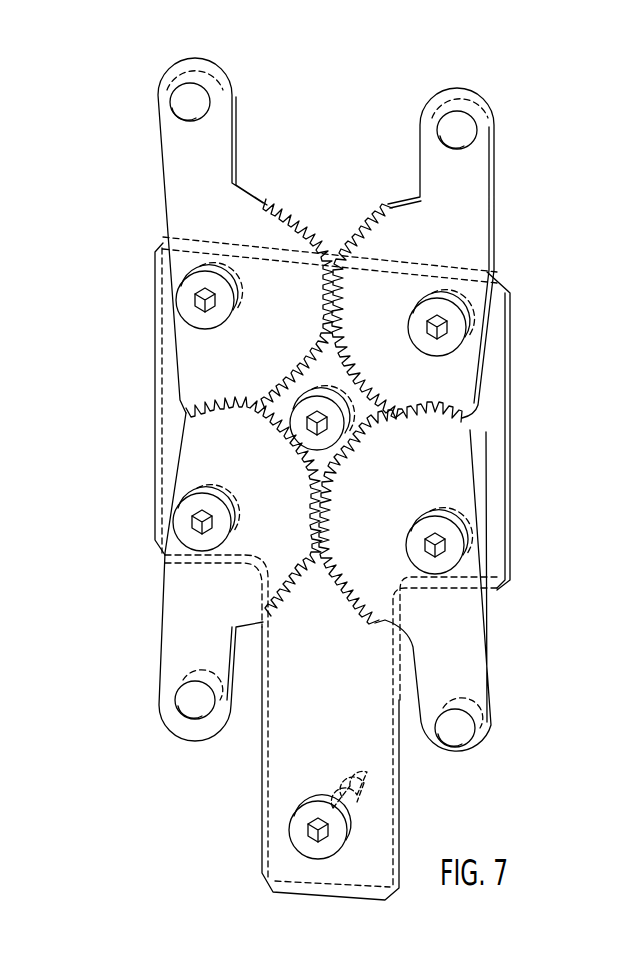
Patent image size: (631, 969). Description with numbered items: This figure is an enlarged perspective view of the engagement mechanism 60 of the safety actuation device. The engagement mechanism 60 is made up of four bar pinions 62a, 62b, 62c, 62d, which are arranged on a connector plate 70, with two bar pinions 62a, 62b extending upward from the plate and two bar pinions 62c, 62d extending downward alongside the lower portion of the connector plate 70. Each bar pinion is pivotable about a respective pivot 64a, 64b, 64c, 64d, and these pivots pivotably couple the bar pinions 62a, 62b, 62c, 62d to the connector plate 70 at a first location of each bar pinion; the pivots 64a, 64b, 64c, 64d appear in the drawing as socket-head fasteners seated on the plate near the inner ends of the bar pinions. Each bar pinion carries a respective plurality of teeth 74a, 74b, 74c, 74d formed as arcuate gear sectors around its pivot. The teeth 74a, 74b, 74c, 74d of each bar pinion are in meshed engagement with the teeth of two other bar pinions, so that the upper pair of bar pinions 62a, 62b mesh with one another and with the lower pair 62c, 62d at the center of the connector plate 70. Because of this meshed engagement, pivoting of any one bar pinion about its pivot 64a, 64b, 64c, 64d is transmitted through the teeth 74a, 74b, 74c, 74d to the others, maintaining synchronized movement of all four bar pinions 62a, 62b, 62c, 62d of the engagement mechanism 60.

The engagement mechanism 60 is at (85, 155).
The bar pinion 62a is at (470, 192).
The bar pinion 62b is at (207, 167).
The bar pinion 62c is at (457, 637).
The bar pinion 62d is at (183, 607).
The pivot 64a is at (457, 327).
The pivot 64b is at (182, 300).
The pivot 64c is at (455, 543).
The pivot 64d is at (180, 520).
The connector plate 70 is at (288, 745).
The teeth 74a is at (360, 237).
The teeth 74b is at (305, 222).
The teeth 74c is at (463, 417).
The teeth 74d is at (187, 414).